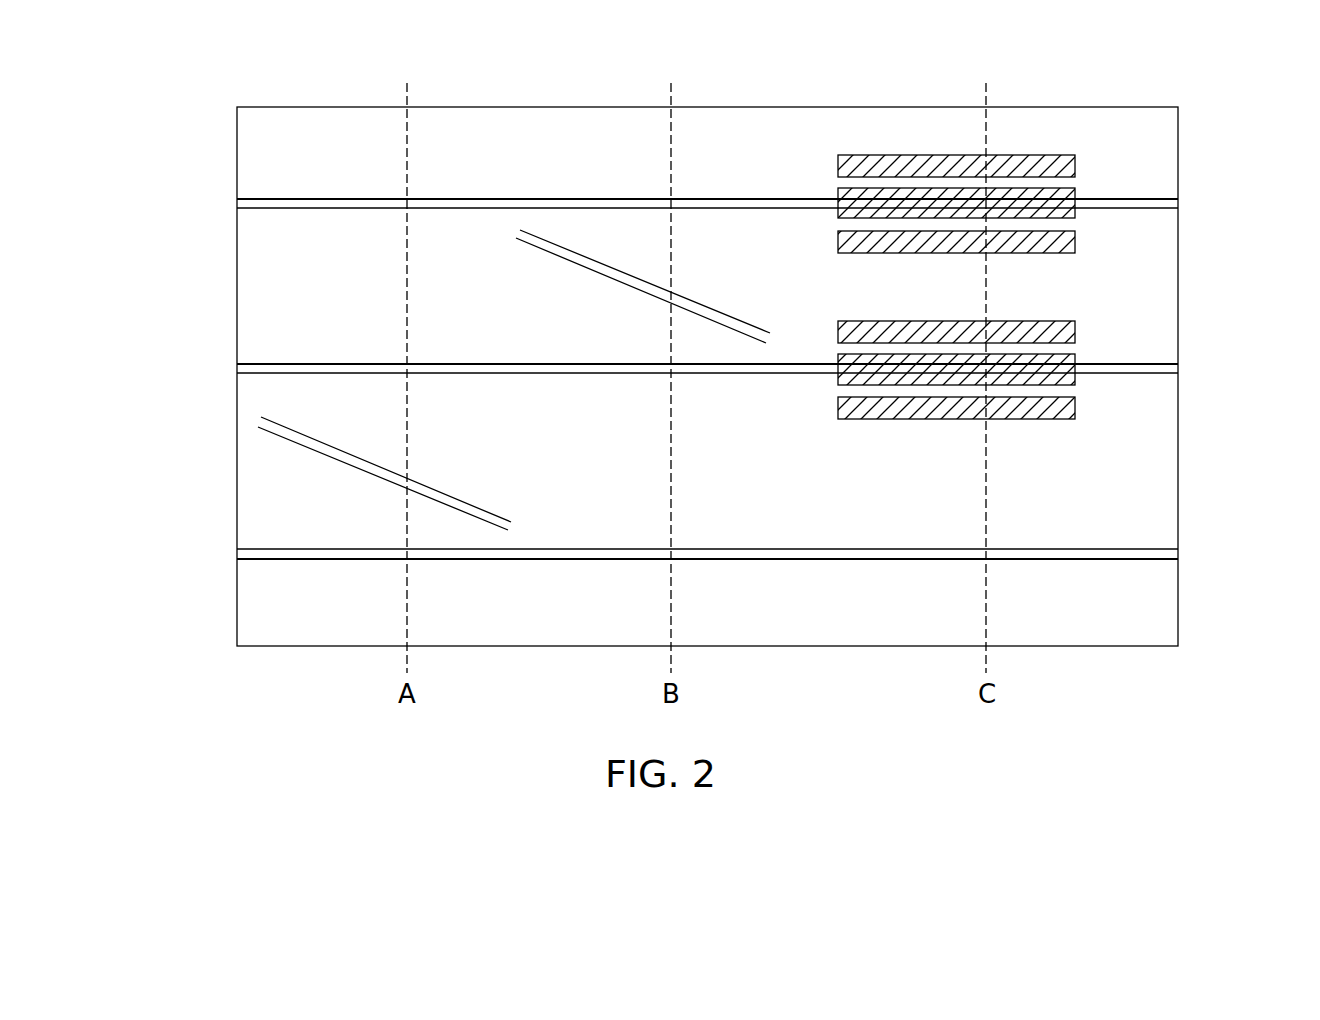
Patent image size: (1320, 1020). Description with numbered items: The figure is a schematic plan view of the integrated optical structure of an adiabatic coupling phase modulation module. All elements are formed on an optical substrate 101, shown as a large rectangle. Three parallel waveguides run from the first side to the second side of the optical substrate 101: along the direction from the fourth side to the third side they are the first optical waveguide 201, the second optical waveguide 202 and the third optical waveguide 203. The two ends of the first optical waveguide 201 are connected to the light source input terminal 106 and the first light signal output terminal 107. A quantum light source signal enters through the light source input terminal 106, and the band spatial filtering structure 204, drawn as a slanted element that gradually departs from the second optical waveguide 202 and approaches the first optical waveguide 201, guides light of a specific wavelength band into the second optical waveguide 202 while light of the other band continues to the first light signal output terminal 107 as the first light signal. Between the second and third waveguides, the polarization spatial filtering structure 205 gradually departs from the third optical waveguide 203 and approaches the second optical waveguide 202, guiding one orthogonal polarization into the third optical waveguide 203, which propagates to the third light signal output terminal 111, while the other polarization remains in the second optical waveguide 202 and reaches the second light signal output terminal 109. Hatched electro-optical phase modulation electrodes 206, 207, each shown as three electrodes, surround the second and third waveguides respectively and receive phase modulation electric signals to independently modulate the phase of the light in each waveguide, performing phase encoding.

The optical substrate 101 is at (255, 147).
The light source input terminal 106 is at (237, 553).
The first light signal output terminal 107 is at (1178, 555).
The second light signal output terminal 109 is at (1178, 370).
The third light signal output terminal 111 is at (1178, 205).
The first optical waveguide 201 is at (249, 555).
The second optical waveguide 202 is at (248, 370).
The third optical waveguide 203 is at (248, 205).
The band spatial filtering structure 204 is at (384, 473).
The polarization spatial filtering structure 205 is at (643, 286).
The electro-optical phase modulation electrode 206 is at (1082, 321).
The electro-optical phase modulation electrode 207 is at (1082, 155).